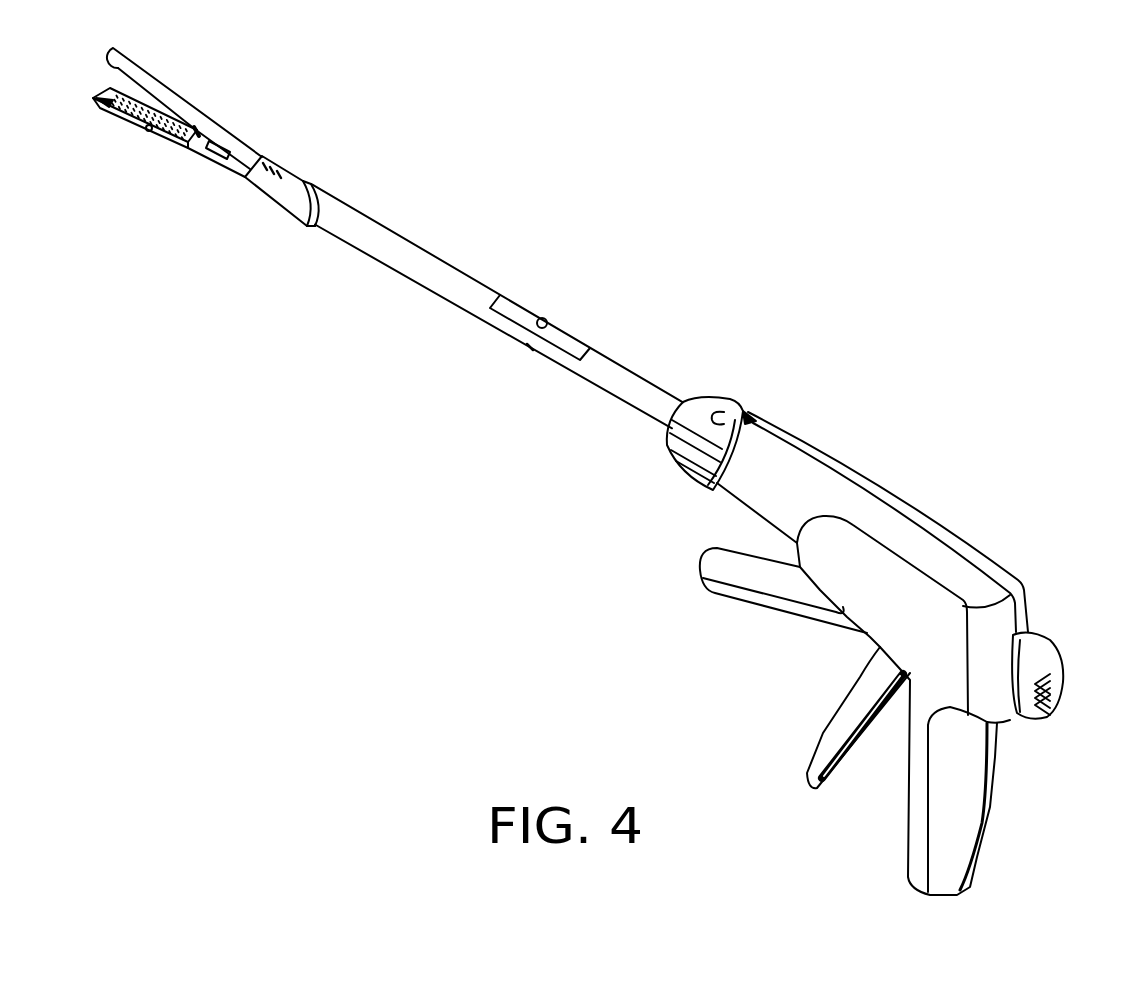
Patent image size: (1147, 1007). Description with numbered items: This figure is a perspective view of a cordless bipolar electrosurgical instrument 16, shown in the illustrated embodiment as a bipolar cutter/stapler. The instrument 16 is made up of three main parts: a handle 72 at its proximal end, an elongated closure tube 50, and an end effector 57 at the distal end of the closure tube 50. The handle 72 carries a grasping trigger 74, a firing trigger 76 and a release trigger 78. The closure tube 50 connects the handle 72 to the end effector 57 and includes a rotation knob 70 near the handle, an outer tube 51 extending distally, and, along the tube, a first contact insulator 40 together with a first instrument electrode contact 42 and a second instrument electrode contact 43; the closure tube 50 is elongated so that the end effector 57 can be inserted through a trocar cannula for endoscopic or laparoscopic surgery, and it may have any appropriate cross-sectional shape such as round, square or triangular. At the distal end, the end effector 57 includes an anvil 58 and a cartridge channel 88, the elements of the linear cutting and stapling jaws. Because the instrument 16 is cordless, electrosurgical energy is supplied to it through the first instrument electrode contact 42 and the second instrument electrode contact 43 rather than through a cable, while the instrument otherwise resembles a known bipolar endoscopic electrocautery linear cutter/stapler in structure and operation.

The electrosurgical instrument 16 is at (655, 493).
The first contact insulator 40 is at (572, 345).
The first instrument electrode contact 42 is at (544, 317).
The second instrument electrode contact 43 is at (535, 351).
The closure tube 50 is at (293, 188).
The outer tube 51 is at (453, 282).
The end effector 57 is at (222, 140).
The anvil 58 is at (167, 93).
The rotation knob 70 is at (720, 398).
The handle 72 is at (833, 459).
The grasping trigger 74 is at (823, 740).
The firing trigger 76 is at (780, 615).
The release trigger 78 is at (1037, 657).
The cartridge channel 88 is at (148, 132).